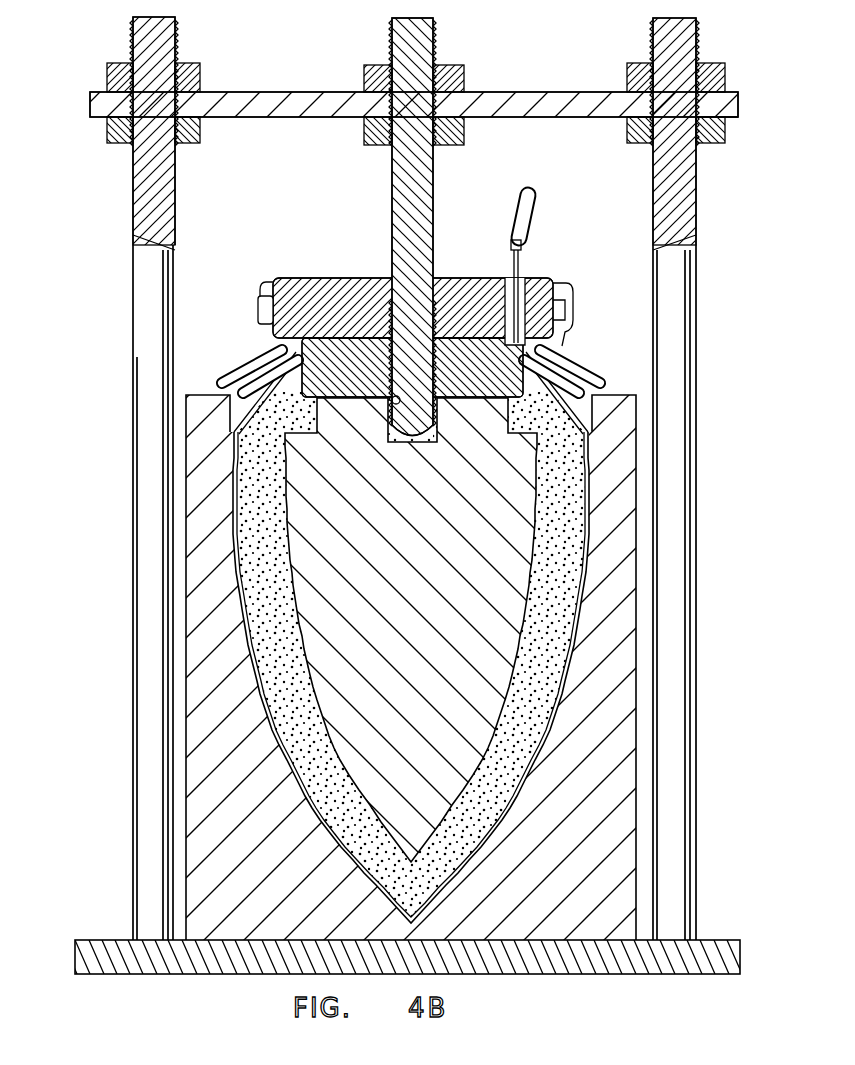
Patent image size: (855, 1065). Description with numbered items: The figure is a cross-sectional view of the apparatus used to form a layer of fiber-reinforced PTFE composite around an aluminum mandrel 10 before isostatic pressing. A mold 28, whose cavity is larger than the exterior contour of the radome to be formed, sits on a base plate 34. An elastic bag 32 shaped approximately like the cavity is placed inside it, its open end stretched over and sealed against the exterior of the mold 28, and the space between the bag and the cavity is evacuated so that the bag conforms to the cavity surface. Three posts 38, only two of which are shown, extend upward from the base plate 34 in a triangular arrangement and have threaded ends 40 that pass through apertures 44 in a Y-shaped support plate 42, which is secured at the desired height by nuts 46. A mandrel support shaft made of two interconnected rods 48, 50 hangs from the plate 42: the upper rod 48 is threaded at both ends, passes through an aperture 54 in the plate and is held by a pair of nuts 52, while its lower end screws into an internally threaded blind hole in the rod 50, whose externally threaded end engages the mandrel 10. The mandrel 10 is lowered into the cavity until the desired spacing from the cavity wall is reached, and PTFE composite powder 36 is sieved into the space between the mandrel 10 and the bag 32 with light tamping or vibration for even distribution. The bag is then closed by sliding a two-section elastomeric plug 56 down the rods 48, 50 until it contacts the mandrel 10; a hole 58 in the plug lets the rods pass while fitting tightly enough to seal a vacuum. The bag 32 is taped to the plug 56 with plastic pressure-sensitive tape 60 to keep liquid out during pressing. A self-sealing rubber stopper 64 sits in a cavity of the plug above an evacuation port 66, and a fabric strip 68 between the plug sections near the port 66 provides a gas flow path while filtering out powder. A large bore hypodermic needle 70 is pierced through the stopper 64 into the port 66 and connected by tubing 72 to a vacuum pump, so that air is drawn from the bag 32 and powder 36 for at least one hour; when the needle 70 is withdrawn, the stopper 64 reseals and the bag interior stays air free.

The mandrel 10 is at (424, 622).
The mold 28 is at (198, 710).
The elastic bag 32 is at (266, 346).
The base plate 34 is at (512, 947).
The PTFE composite powder 36 is at (247, 488).
The posts 38 is at (133, 340).
The threaded ends 40 is at (176, 35).
The Y-shaped support plate 42 is at (492, 93).
The apertures 44 is at (128, 126).
The nuts 46 is at (106, 128).
The rod 48 is at (393, 229).
The rod 50 is at (427, 379).
The nuts 52 is at (362, 125).
The aperture 54 is at (440, 68).
The elastomeric plug 56 is at (362, 310).
The hole 58 is at (390, 407).
The plastic pressure-sensitive tape 60 is at (266, 296).
The self-sealing rubber stopper 64 is at (528, 303).
The evacuation port 66 is at (558, 295).
The fabric strip 68 is at (578, 363).
The hypodermic needle 70 is at (512, 275).
The tubing 72 is at (538, 202).